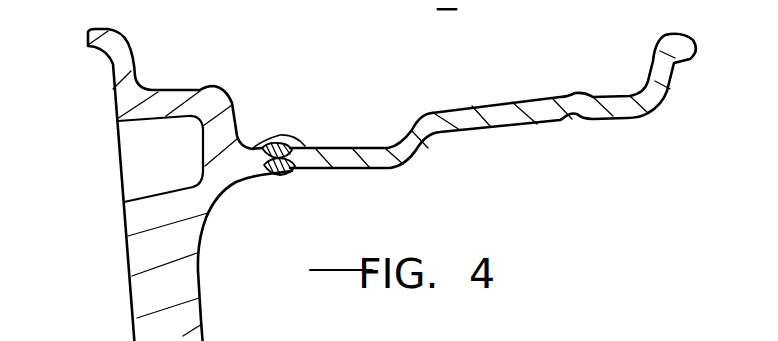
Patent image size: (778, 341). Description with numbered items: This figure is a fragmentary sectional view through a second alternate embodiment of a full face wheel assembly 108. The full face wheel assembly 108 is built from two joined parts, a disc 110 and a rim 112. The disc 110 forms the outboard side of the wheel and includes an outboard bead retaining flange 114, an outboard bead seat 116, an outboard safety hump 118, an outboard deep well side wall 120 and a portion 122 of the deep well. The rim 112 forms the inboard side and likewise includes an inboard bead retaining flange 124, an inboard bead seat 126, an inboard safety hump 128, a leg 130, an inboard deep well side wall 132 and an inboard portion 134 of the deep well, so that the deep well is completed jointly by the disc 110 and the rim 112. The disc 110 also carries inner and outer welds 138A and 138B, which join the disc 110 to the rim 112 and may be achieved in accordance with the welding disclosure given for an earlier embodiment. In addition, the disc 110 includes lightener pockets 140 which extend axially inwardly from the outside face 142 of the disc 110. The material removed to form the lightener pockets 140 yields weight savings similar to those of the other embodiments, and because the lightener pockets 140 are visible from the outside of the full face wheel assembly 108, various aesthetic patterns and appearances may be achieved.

The full face wheel assembly 108 is at (521, 48).
The disc 110 is at (100, 125).
The rim 112 is at (553, 130).
The outboard bead retaining flange 114 is at (104, 35).
The outboard bead seat 116 is at (162, 81).
The outboard safety hump 118 is at (217, 78).
The outboard deep well side wall 120 is at (229, 106).
The portion of the deep well 122 is at (282, 129).
The inboard bead retaining flange 124 is at (667, 37).
The inboard bead seat 126 is at (604, 88).
The inboard safety hump 128 is at (569, 89).
The leg 130 is at (450, 100).
The inboard deep well side wall 132 is at (391, 132).
The inboard portion of the deep well 134 is at (330, 140).
The inner weld 138A is at (304, 139).
The outer weld 138B is at (270, 169).
The lightener pockets 140 is at (172, 158).
The outside face 142 is at (117, 233).